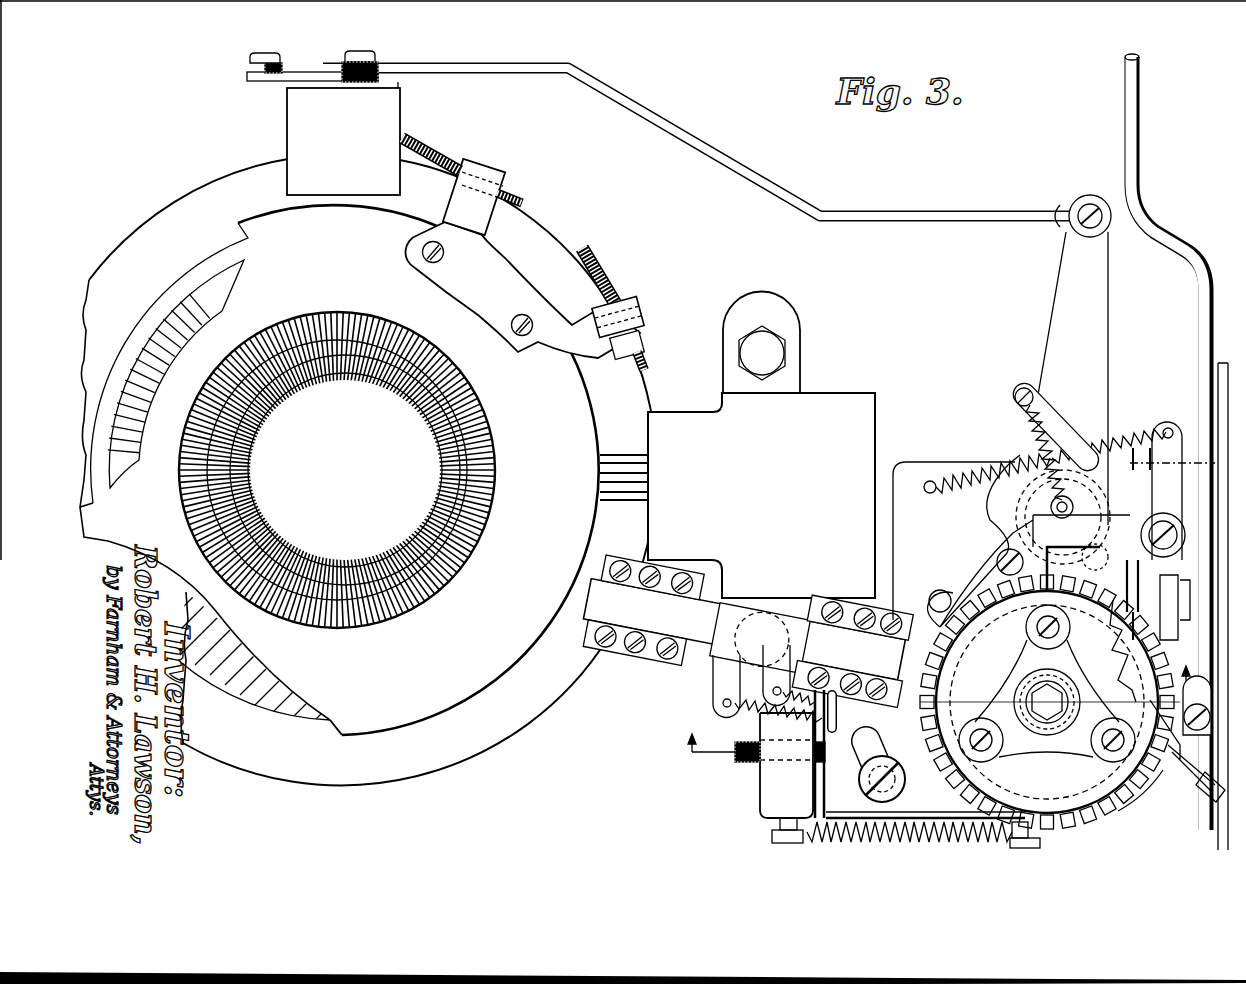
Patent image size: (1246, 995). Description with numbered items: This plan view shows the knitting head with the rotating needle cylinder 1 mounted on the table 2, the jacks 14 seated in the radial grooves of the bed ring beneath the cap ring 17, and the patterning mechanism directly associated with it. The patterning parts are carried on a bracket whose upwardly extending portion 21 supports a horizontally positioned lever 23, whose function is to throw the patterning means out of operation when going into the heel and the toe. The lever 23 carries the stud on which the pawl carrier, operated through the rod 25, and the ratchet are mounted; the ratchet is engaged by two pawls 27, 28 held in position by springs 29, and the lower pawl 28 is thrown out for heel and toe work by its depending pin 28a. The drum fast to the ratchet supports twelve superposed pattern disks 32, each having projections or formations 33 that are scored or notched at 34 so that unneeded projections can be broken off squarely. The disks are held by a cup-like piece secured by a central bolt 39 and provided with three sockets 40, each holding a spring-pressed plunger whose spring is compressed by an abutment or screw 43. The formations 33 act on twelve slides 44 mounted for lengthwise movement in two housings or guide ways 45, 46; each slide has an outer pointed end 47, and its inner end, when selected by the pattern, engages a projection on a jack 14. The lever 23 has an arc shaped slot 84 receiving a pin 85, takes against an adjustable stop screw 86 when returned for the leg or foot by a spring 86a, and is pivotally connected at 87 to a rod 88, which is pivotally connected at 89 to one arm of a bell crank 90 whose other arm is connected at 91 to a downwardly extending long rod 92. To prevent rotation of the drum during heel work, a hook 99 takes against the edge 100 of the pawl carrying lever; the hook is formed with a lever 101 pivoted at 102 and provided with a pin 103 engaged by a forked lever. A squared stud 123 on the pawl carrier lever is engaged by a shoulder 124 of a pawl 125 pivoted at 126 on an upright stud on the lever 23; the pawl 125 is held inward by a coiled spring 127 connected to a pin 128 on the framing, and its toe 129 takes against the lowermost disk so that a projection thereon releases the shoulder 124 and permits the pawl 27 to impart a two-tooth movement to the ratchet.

The needle cylinder 1 is at (210, 458).
The jack 14 is at (212, 298).
The cap ring 17 is at (433, 716).
The upwardly extending portion 21 is at (758, 718).
The lever 23 is at (1105, 352).
The rod 25 is at (1175, 222).
The pawl 27 is at (985, 580).
The pawl 28 is at (996, 565).
The depending pin 28a is at (935, 596).
The springs 29 is at (1018, 420).
The disks 32 is at (1124, 670).
The projections 33 is at (903, 776).
The notch 34 is at (893, 766).
The central bolt 39 is at (1048, 735).
The sockets 40 is at (1028, 630).
The abutment screw 43 is at (1062, 638).
The slides 44 is at (737, 669).
The guide way 45 is at (638, 636).
The guide way 46 is at (850, 669).
The outer pointed end 47 is at (1010, 690).
The arc shaped slot 84 is at (884, 746).
The pin 85 is at (900, 786).
The adjustable stop screw 86 is at (746, 762).
The spring 86a is at (975, 822).
The pivot 87 is at (1085, 203).
The rod 88 is at (950, 213).
The pivot 89 is at (376, 60).
The bell crank 90 is at (284, 92).
The pivot 91 is at (250, 61).
The long rod 92 is at (266, 80).
The hook 99 is at (1128, 805).
The edge 100 is at (1175, 762).
The lever 101 is at (1128, 608).
The pivot 102 is at (1186, 580).
The pin 103 is at (1220, 790).
The squared stud 123 is at (1128, 592).
The shoulder 124 is at (1128, 574).
The pawl 125 is at (1170, 425).
The pivot 126 is at (1163, 513).
The coiled spring 127 is at (1115, 440).
The pin 128 is at (935, 480).
The toe 129 is at (1030, 612).
The table 2 is at (942, 719).